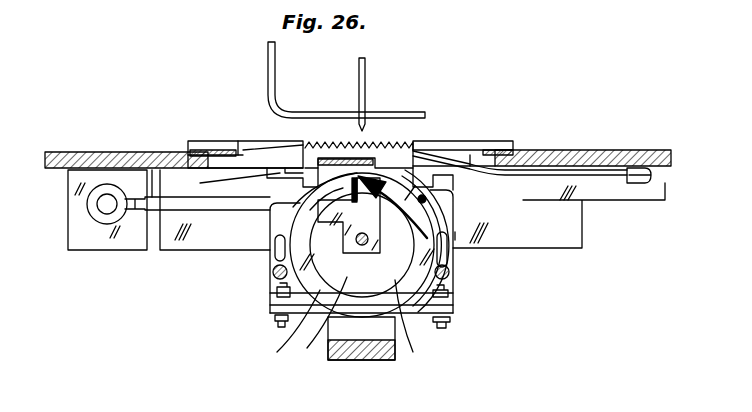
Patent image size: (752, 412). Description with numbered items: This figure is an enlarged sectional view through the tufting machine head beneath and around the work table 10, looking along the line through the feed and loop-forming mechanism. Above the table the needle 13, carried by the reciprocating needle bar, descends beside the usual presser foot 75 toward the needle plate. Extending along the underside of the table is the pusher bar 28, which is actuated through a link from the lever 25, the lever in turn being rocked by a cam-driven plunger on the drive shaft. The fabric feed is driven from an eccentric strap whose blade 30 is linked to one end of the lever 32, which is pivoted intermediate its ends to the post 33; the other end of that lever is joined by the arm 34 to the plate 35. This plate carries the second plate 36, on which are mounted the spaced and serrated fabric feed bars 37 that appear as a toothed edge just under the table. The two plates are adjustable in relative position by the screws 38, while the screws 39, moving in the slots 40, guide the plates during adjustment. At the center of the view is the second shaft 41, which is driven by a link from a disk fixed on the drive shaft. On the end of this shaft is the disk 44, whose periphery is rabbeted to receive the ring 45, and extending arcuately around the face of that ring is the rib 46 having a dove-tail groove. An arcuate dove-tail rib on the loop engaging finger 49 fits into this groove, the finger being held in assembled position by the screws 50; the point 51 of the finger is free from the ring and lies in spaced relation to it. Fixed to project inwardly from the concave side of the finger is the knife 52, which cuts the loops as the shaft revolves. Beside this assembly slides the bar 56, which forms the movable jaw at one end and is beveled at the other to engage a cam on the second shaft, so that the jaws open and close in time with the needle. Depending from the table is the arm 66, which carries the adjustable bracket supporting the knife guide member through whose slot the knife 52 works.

The work table 10 is at (641, 122).
The needle 13 is at (365, 82).
The lever 25 is at (652, 176).
The pusher bar 28 is at (520, 152).
The blade 30 is at (448, 243).
The lever 32 is at (105, 204).
The post 33 is at (75, 245).
The arm 34 is at (198, 182).
The plate 35 is at (272, 222).
The second plate 36 is at (272, 302).
The fabric feed bars 37 is at (402, 148).
The screws 38 is at (280, 322).
The screws 39 is at (272, 275).
The slots 40 is at (274, 250).
The second shaft 41 is at (350, 255).
The disk 44 is at (307, 348).
The ring 45 is at (277, 352).
The rib 46 is at (418, 324).
The loop engaging finger 49 is at (445, 213).
The screws 50 is at (428, 196).
The point 51 is at (300, 196).
The knife 52 is at (418, 182).
The bar 56 is at (372, 156).
The arm 66 is at (360, 358).
The presser foot 75 is at (392, 112).